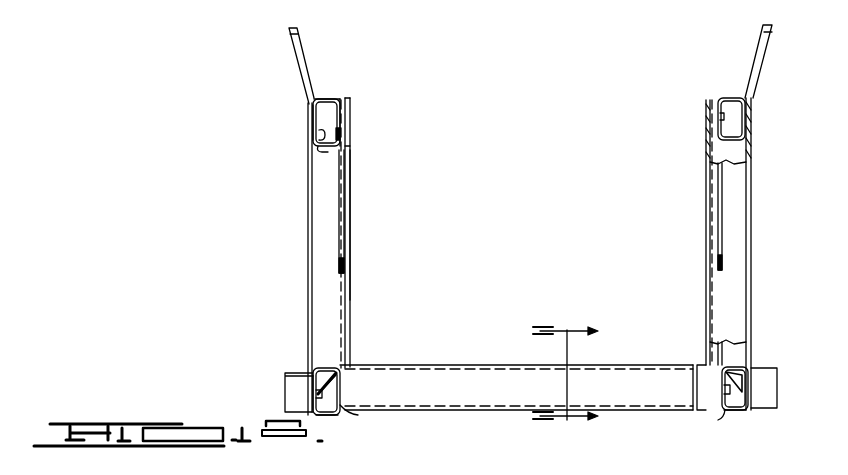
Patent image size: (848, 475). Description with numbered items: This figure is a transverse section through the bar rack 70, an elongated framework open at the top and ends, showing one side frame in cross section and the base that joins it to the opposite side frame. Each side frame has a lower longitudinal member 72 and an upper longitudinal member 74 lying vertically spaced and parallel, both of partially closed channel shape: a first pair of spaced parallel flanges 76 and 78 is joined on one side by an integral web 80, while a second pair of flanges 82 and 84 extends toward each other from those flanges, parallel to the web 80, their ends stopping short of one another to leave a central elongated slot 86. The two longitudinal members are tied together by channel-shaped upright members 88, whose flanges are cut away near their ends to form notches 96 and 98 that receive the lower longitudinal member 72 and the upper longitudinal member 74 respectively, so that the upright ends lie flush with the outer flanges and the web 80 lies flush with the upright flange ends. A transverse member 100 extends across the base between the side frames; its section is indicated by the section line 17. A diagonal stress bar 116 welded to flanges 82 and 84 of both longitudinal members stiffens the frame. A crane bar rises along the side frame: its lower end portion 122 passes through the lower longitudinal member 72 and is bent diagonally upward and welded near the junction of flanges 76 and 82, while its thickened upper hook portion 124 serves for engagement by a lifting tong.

The bar rack 70 is at (298, 241).
The lower longitudinal member 72 is at (332, 416).
The upper longitudinal member 74 is at (334, 98).
The flange 76 is at (327, 99).
The flange 78 is at (323, 152).
The web 80 is at (313, 118).
The flange 82 is at (340, 103).
The flange 84 is at (345, 135).
The elongated slot 86 is at (348, 112).
The upright member 88 is at (350, 293).
The notch 96 is at (318, 394).
The notch 98 is at (320, 136).
The transverse member 100 is at (443, 365).
The stress bar 116 is at (340, 210).
The lower end portion 122 is at (335, 381).
The hook portion 124 is at (296, 60).
The section line 17- 17 is at (577, 385).